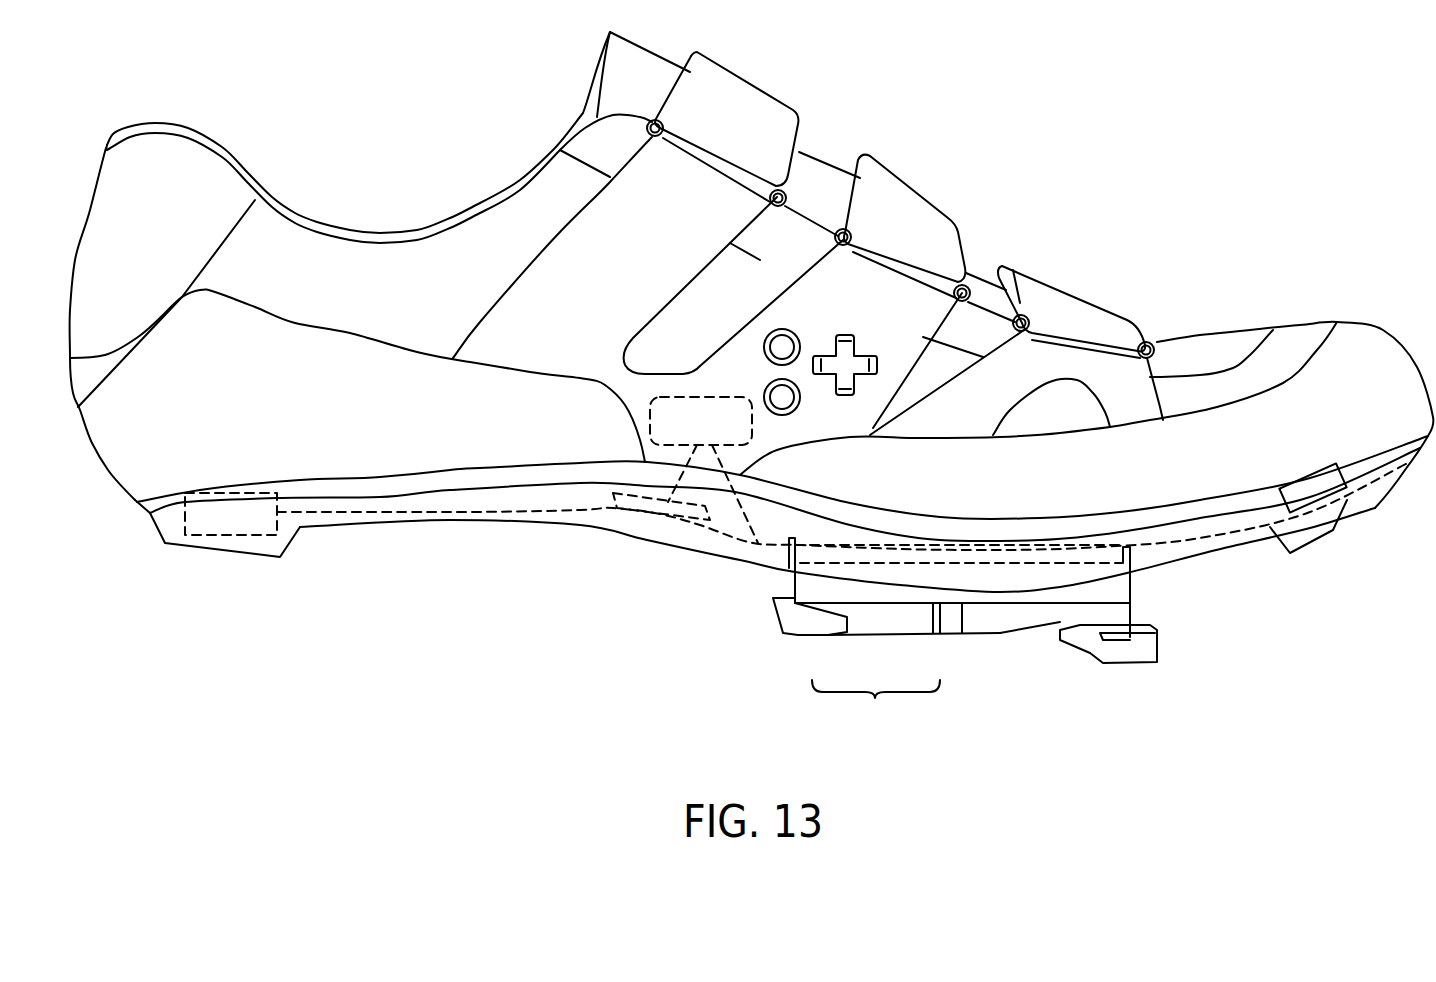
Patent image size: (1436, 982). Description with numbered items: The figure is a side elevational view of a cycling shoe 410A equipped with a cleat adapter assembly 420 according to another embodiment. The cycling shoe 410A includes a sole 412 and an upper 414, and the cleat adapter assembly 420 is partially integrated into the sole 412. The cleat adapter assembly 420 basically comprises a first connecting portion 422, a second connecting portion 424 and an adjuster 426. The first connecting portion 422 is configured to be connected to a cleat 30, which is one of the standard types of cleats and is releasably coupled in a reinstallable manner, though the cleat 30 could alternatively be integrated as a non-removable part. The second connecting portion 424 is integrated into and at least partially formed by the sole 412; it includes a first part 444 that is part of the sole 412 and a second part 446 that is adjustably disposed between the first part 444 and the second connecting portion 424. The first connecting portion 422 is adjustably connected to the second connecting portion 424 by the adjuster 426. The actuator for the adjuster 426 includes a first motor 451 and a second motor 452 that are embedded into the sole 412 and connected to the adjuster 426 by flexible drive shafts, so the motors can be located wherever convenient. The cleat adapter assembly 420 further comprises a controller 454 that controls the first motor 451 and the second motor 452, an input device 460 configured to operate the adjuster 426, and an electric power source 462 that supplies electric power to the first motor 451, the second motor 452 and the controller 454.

The cycling shoe 410A is at (1099, 158).
The upper 414 is at (1192, 338).
The sole 412 is at (1238, 548).
The cleat adapter assembly 420 is at (1169, 609).
The first connecting portion 422 is at (1032, 598).
The second connecting portion 424 is at (876, 708).
The first part 444 is at (867, 535).
The second part 446 is at (920, 577).
The cleat 30 is at (987, 640).
The adjuster 426 is at (776, 556).
The first motor 451 is at (213, 537).
The second motor 452 is at (1292, 480).
The controller 454 is at (648, 410).
The input device 460 is at (856, 324).
The electric power source 462 is at (630, 510).